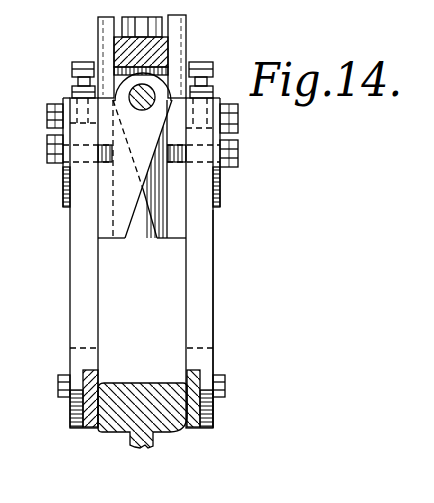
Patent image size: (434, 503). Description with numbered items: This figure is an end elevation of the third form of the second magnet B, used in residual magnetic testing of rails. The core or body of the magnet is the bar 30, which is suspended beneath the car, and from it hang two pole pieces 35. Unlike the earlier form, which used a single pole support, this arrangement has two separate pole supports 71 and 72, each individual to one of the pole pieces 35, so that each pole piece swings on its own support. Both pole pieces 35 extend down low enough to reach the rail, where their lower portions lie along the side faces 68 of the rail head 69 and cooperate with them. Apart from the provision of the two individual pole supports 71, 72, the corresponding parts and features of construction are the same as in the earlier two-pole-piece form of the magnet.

The core bar 30 is at (80, 275).
The pole piece 35 is at (204, 257).
The pole support 71 is at (118, 198).
The pole support 72 is at (156, 193).
The side face of the rail head 68 is at (174, 383).
The rail head 69 is at (125, 425).
The second magnet B is at (214, 290).